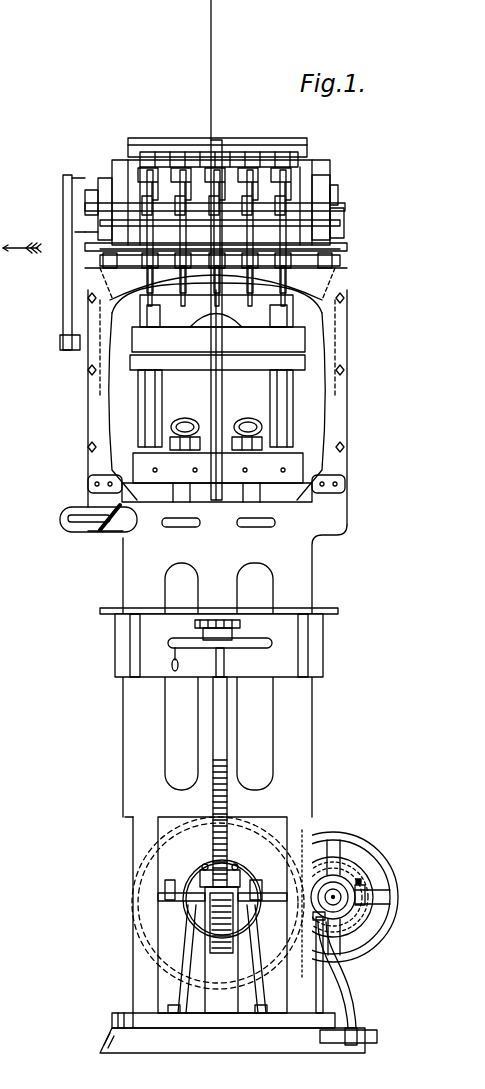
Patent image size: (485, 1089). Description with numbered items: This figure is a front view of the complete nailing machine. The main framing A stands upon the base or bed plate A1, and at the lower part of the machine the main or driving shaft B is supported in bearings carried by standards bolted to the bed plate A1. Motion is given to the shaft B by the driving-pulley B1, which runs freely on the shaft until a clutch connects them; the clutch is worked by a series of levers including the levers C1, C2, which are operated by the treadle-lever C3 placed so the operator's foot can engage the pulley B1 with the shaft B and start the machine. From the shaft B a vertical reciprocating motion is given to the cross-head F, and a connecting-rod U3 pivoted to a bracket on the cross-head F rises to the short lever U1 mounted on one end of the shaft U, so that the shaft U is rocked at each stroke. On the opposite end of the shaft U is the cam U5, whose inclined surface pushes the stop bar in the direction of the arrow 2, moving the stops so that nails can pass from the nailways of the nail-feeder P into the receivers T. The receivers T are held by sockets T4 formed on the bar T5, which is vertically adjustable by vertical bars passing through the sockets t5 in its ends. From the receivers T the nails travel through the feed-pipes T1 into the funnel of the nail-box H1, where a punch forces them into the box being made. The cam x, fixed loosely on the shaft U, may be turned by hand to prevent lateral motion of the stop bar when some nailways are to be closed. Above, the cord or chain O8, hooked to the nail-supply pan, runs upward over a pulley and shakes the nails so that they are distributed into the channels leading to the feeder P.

The cord or chain O8 is at (222, 250).
The nail-feeder P is at (216, 209).
The receivers T is at (219, 230).
The feed-pipes T1 is at (224, 286).
The sockets T4 is at (150, 262).
The bar T5 is at (347, 251).
The sockets t5 is at (347, 263).
The short lever U1 is at (72, 248).
The shaft U is at (338, 198).
The cam U5 is at (344, 225).
The connecting-rod U3 is at (63, 257).
The cam x is at (83, 232).
The arrow 2 is at (22, 241).
The main framing A is at (216, 648).
The nail-box H1 is at (202, 492).
The cross-head F is at (217, 372).
The base or bed plate A1 is at (232, 876).
The main or driving shaft B is at (398, 866).
The driving-pulley B1 is at (398, 886).
The lever C1 is at (328, 968).
The lever C2 is at (350, 993).
The treadle-lever C3 is at (360, 1028).